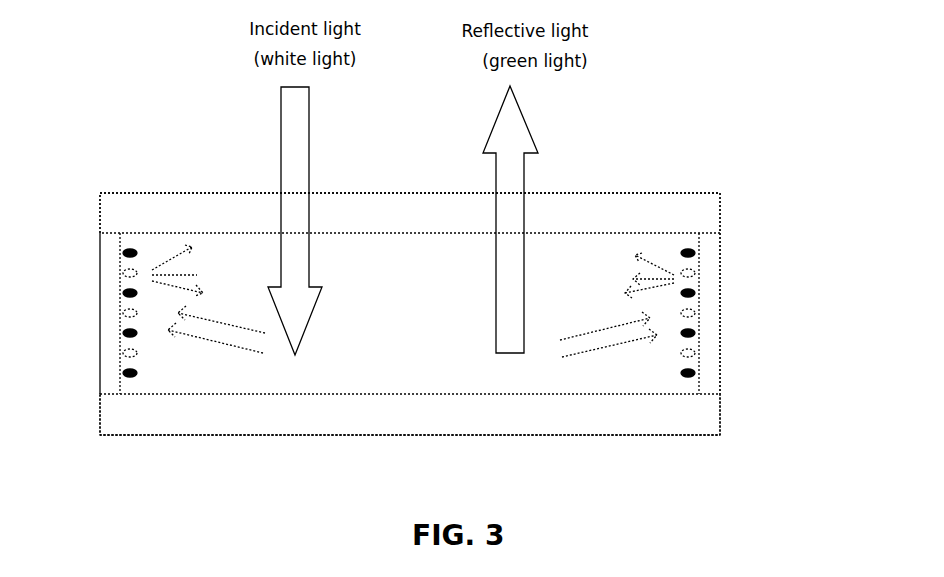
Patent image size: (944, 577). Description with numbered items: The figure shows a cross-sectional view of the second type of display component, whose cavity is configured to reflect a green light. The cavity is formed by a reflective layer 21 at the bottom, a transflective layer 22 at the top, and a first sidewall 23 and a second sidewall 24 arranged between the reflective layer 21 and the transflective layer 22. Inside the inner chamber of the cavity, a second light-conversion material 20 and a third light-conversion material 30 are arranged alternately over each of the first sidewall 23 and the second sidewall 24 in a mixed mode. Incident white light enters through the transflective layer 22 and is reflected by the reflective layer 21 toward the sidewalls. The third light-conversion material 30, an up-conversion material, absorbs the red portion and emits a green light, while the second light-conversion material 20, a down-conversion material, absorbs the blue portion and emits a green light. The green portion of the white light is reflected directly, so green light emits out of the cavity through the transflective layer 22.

The second light-conversion material 20 is at (692, 296).
The reflective layer 21 is at (648, 413).
The transflective layer 22 is at (680, 207).
The first sidewall 23 is at (110, 330).
The second sidewall 24 is at (710, 355).
The third light-conversion material 30 is at (123, 280).